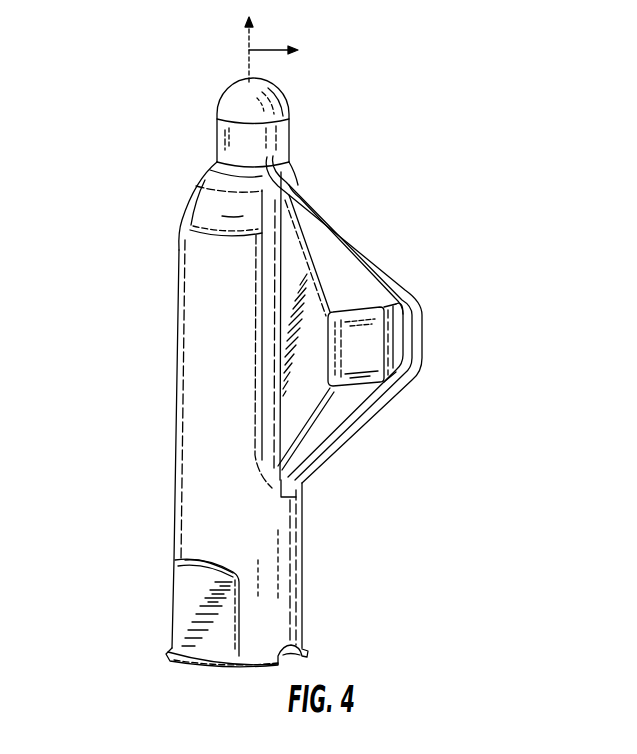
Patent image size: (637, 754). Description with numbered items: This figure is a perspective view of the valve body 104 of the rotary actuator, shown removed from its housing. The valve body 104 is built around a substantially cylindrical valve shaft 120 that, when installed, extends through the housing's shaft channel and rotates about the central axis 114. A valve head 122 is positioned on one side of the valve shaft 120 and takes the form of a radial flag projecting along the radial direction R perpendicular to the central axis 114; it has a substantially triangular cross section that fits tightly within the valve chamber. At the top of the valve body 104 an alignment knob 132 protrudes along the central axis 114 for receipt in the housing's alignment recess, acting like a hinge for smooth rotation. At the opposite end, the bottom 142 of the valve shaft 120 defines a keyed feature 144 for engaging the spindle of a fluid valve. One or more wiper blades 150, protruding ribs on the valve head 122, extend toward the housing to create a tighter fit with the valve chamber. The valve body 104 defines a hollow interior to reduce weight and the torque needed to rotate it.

The valve body 104 is at (153, 182).
The central axis 114 is at (248, 25).
The valve shaft 120 is at (201, 540).
The valve head 122 is at (318, 342).
The alignment knob 132 is at (285, 110).
The bottom 142 is at (183, 663).
The keyed feature 144 is at (191, 607).
The wiper blade 150 is at (368, 406).